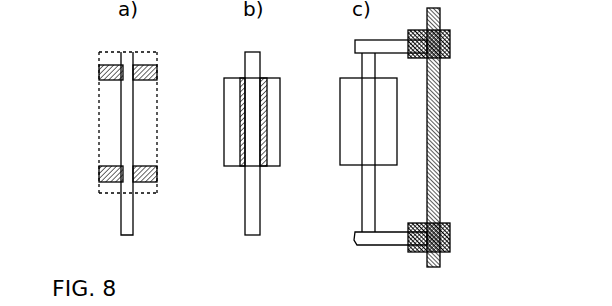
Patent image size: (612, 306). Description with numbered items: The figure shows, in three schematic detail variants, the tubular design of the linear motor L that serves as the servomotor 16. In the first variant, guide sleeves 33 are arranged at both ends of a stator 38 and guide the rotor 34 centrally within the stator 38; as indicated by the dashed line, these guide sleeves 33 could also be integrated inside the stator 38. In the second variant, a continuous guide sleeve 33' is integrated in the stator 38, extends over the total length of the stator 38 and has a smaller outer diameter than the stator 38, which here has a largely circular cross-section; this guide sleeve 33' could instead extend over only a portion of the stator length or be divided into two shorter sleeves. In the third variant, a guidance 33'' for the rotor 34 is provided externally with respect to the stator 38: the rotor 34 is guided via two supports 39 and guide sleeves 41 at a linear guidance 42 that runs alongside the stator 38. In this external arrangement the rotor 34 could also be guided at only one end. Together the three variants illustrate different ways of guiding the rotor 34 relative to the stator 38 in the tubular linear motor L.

The servomotor 16 is at (158, 51).
The guide sleeve 33 is at (106, 123).
The continuous guide sleeve 33' is at (238, 143).
The guidance 33'' is at (478, 13).
The rotor 34 is at (125, 105).
The stator 38 is at (147, 145).
The support 39 is at (391, 40).
The guide sleeve 41 is at (452, 42).
The linear guidance 42 is at (440, 160).
The linear motor L is at (169, 83).